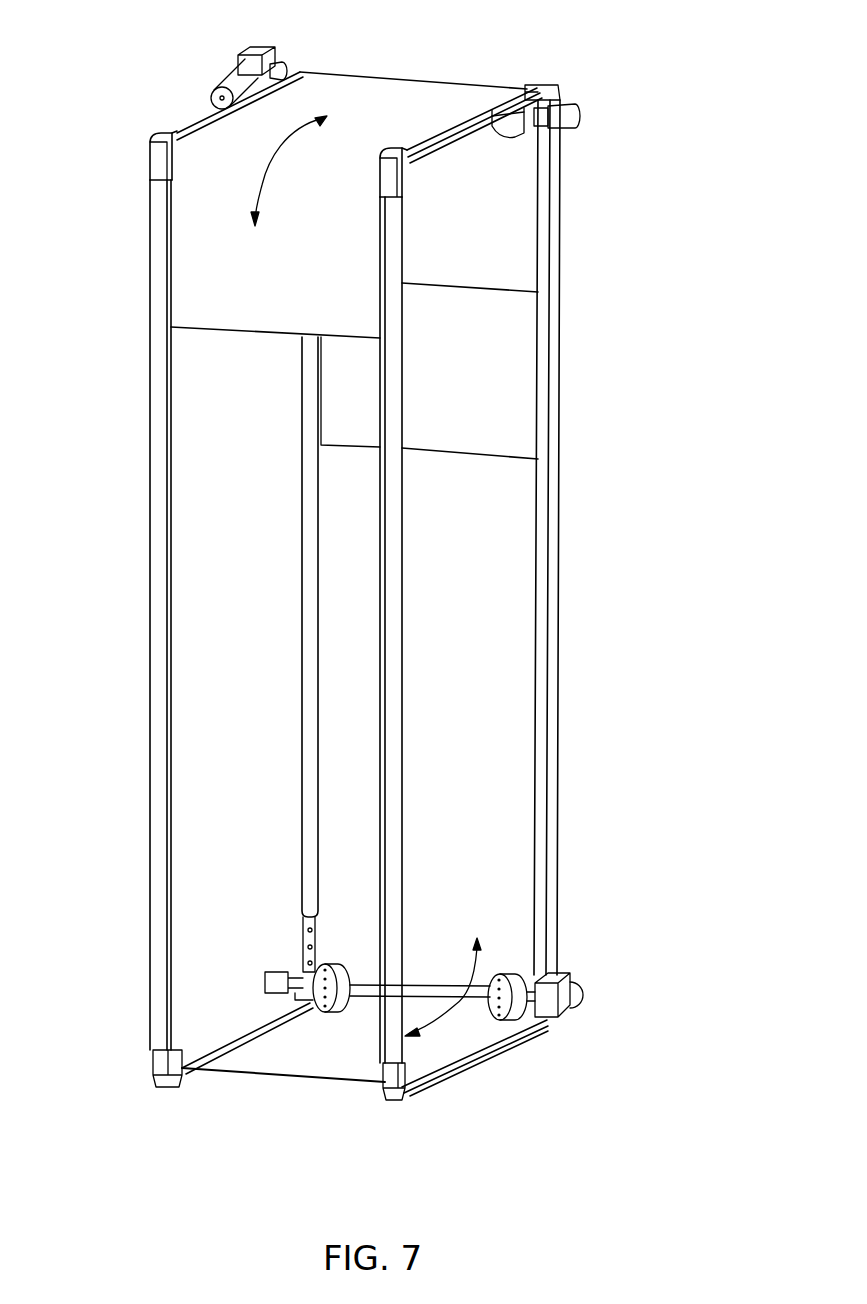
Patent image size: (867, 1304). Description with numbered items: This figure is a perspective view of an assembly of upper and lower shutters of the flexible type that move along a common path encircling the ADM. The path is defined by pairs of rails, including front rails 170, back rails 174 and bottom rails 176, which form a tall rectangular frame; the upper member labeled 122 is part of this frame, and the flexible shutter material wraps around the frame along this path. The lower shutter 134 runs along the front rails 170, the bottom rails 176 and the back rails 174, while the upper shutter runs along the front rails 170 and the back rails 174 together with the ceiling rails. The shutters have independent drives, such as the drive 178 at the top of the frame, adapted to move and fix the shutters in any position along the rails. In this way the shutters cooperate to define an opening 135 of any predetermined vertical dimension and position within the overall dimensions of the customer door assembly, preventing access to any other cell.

The upper frame rails 122 is at (333, 75).
The lower shutter 134 is at (561, 571).
The opening 135 is at (506, 414).
The front rails 170 is at (312, 664).
The back rails 174 is at (392, 533).
The bottom rails 176 is at (463, 1058).
The drive 178 is at (238, 58).